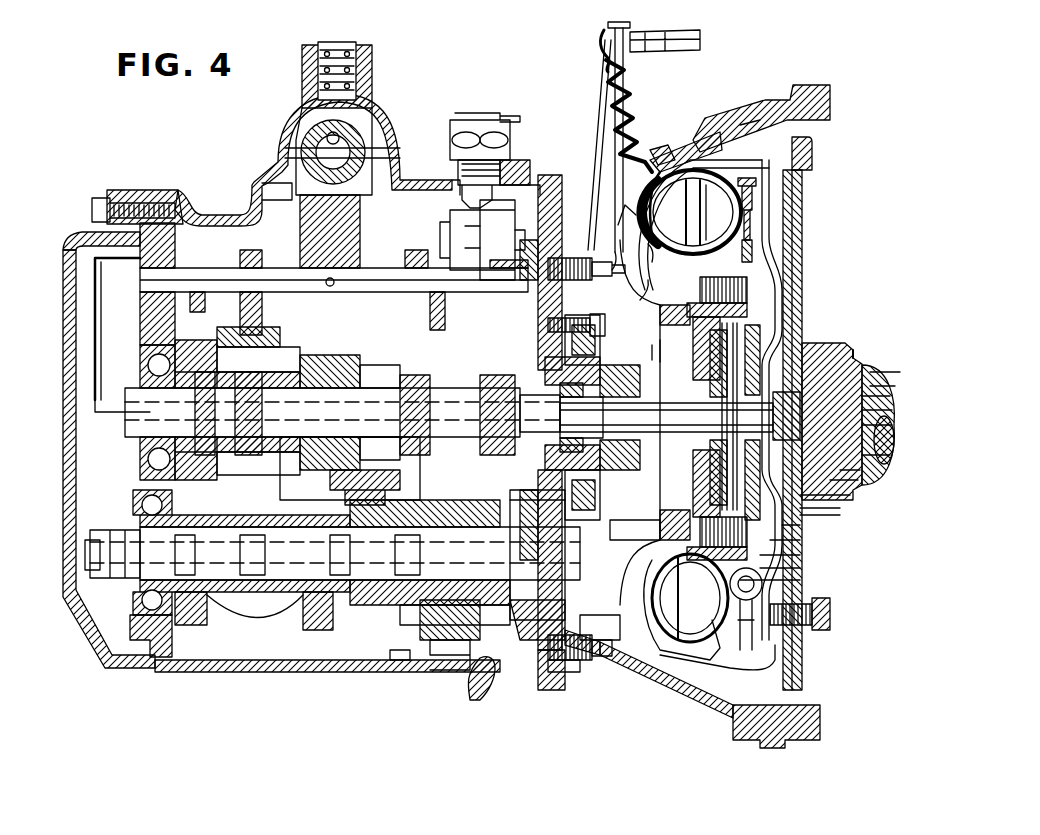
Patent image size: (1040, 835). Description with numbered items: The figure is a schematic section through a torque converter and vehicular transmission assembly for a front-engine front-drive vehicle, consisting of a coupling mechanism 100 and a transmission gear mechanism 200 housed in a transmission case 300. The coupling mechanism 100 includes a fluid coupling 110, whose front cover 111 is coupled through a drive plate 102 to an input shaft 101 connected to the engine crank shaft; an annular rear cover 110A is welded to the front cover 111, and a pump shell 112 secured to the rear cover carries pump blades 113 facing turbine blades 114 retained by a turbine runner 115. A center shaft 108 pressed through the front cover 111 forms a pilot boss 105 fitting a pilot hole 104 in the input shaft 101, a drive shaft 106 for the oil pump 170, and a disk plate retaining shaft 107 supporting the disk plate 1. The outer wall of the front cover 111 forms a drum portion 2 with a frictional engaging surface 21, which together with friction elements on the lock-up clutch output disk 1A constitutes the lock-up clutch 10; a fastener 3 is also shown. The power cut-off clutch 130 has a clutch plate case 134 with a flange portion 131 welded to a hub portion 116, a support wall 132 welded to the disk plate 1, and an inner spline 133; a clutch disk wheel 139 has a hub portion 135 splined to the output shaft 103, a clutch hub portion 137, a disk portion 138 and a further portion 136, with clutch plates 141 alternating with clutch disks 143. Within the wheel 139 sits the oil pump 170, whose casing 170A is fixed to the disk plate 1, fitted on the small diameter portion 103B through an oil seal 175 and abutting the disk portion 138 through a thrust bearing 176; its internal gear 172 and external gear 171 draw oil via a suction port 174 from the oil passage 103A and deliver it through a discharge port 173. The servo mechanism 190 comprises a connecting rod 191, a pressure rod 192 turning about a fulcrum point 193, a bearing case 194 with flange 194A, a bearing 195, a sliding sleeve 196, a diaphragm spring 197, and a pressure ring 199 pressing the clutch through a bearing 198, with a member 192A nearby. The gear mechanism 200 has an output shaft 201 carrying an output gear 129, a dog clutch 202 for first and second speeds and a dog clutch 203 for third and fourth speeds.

The disk plate 1 is at (790, 300).
The lock-up clutch output disk 1A is at (802, 210).
The drum portion 2 is at (812, 155).
The bolt 3 is at (760, 200).
The lock-up clutch 10 is at (818, 125).
The frictional engaging surface 21 is at (756, 185).
The coupling mechanism 100 is at (732, 138).
The input shaft 101 is at (872, 368).
The drive plate 102 is at (745, 290).
The output shaft 103 is at (880, 420).
The oil passage 103A is at (650, 640).
The small diameter portion 103B is at (895, 427).
The pilot hole 104 is at (880, 398).
The pilot boss 105 is at (885, 387).
The drive shaft 106 is at (895, 440).
The disk plate retaining shaft 107 is at (880, 456).
The center shaft 108 is at (880, 374).
The fluid coupling 110 is at (690, 160).
The rear cover 110A is at (658, 196).
The front cover 111 is at (802, 232).
The pump shell 112 is at (685, 150).
The pump blades 113 is at (690, 217).
The turbine blades 114 is at (723, 217).
The turbine runner 115 is at (722, 660).
The hub portion 116 is at (747, 290).
The output gear 129 is at (540, 650).
The power cut-off clutch 130 is at (782, 284).
The flange portion 131 is at (715, 590).
The support wall 132 is at (805, 584).
The inner spline 133 is at (700, 650).
The clutch plate case 134 is at (713, 650).
The hub portion 135 is at (700, 630).
The plate 136 is at (800, 558).
The clutch hub portion 137 is at (800, 542).
The disk portion 138 is at (800, 528).
The clutch disk wheel 139 is at (805, 518).
The clutch plates 141 is at (830, 612).
The clutch disks 143 is at (805, 572).
The oil pump 170 is at (790, 340).
The casing 170A is at (765, 330).
The external gear 171 is at (850, 476).
The internal gear 172 is at (810, 510).
The discharge port 173 is at (810, 498).
The suction port 174 is at (850, 483).
The oil seal 175 is at (885, 410).
The thrust bearing 176 is at (855, 349).
The servo mechanism 190 is at (598, 32).
The connecting rod 191 is at (678, 40).
The pressure rod 192 is at (624, 68).
The bolt 192A is at (560, 672).
The fulcrum point 193 is at (620, 268).
The bearing case 194 is at (608, 272).
The flange 194A is at (630, 545).
The bearing 195 is at (652, 344).
The sliding sleeve 196 is at (603, 333).
The diaphragm spring 197 is at (638, 245).
The bearing 198 is at (642, 292).
The pressure ring 199 is at (636, 215).
The transmission gear mechanism 200 is at (262, 213).
The output shaft 201 is at (232, 572).
The dog clutch 202 is at (448, 648).
The dog clutch 203 is at (240, 315).
The transmission case 300 is at (432, 178).